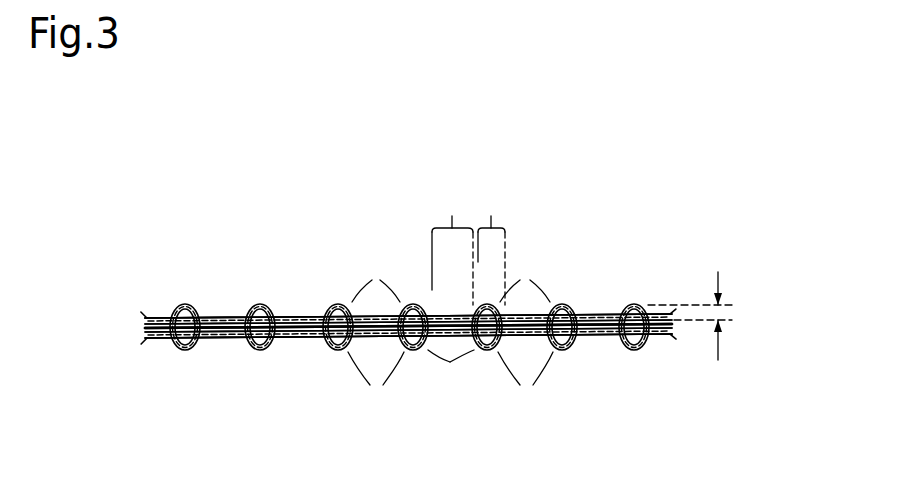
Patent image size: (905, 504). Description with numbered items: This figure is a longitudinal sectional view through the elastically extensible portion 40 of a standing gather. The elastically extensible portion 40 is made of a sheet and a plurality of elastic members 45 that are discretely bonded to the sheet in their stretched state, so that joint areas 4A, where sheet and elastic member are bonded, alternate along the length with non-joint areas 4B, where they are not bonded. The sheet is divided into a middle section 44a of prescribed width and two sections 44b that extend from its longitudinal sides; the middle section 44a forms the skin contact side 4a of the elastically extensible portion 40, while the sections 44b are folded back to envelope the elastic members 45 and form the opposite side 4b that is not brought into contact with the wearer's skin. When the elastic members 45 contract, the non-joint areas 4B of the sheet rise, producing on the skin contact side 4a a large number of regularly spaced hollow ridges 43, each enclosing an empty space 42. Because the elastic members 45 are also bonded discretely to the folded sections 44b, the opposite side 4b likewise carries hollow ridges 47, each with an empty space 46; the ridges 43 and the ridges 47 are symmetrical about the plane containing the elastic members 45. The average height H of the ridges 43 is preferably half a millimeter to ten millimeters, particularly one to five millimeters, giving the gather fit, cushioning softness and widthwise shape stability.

The elastically extensible portion 40 is at (154, 232).
The skin contact side 4a is at (258, 240).
The opposite side 4b is at (246, 385).
The joint area 4A is at (452, 241).
The non-joint area 4B is at (493, 241).
The empty space 42 is at (326, 312).
The hollow ridge 43 is at (451, 269).
The middle section 44a is at (606, 316).
The section 44b is at (606, 338).
The elastic member 45 is at (572, 300).
The empty space 46 is at (450, 362).
The hollow ridge 47 is at (450, 386).
The average height H is at (705, 316).